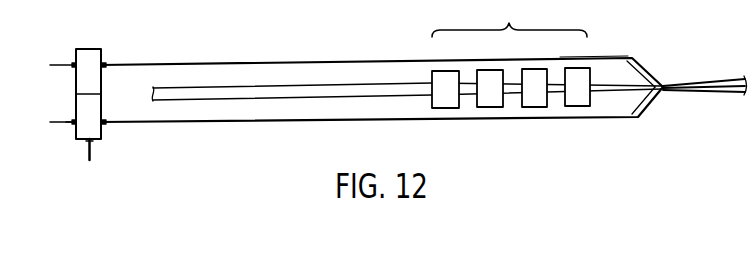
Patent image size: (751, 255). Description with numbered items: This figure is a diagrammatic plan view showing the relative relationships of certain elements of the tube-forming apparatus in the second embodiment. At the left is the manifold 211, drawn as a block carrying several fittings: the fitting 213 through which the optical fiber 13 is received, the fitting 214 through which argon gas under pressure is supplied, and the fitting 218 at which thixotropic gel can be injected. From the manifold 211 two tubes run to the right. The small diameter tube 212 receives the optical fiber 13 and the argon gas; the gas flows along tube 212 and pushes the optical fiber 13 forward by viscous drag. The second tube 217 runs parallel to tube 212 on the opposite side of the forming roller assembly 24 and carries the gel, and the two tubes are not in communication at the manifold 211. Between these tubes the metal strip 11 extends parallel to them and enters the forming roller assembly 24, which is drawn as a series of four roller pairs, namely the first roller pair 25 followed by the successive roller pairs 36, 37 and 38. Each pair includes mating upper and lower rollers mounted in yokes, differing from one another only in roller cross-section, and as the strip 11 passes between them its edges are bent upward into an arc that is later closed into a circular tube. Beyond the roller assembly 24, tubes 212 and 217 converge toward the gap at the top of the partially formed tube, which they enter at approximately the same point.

The strip 11 is at (218, 88).
The optical fiber 13 is at (50, 125).
The forming roller assembly 24 is at (520, 84).
The first roller pair 25 is at (445, 109).
The roller pair 36 is at (487, 108).
The roller pair 37 is at (532, 108).
The roller pair 38 is at (580, 107).
The manifold 211 is at (97, 49).
The small diameter tube 212 is at (238, 124).
The fitting 213 is at (70, 127).
The fitting 214 is at (92, 148).
The second tube 217 is at (280, 59).
The fitting 218 is at (73, 62).